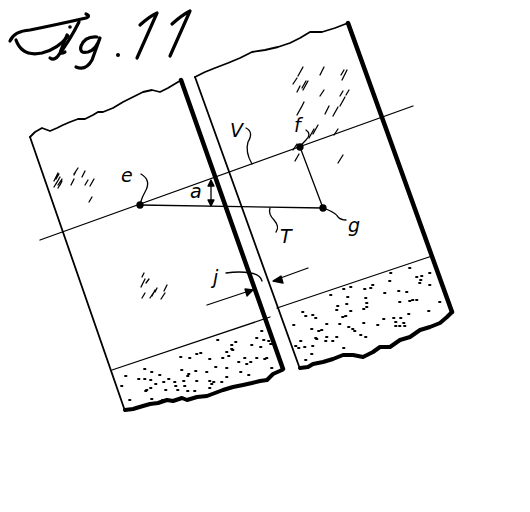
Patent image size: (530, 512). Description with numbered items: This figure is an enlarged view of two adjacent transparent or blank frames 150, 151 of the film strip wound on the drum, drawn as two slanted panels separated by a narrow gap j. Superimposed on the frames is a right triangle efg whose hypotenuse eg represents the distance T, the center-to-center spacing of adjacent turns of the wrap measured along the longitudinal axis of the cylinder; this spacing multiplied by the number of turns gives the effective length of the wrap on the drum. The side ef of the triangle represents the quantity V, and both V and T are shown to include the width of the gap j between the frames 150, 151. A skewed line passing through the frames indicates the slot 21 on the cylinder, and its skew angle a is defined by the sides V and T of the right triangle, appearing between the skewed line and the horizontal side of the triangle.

The transparent or blank frame 150 is at (96, 310).
The transparent or blank frame 151 is at (387, 174).
The slot 21 is at (413, 106).